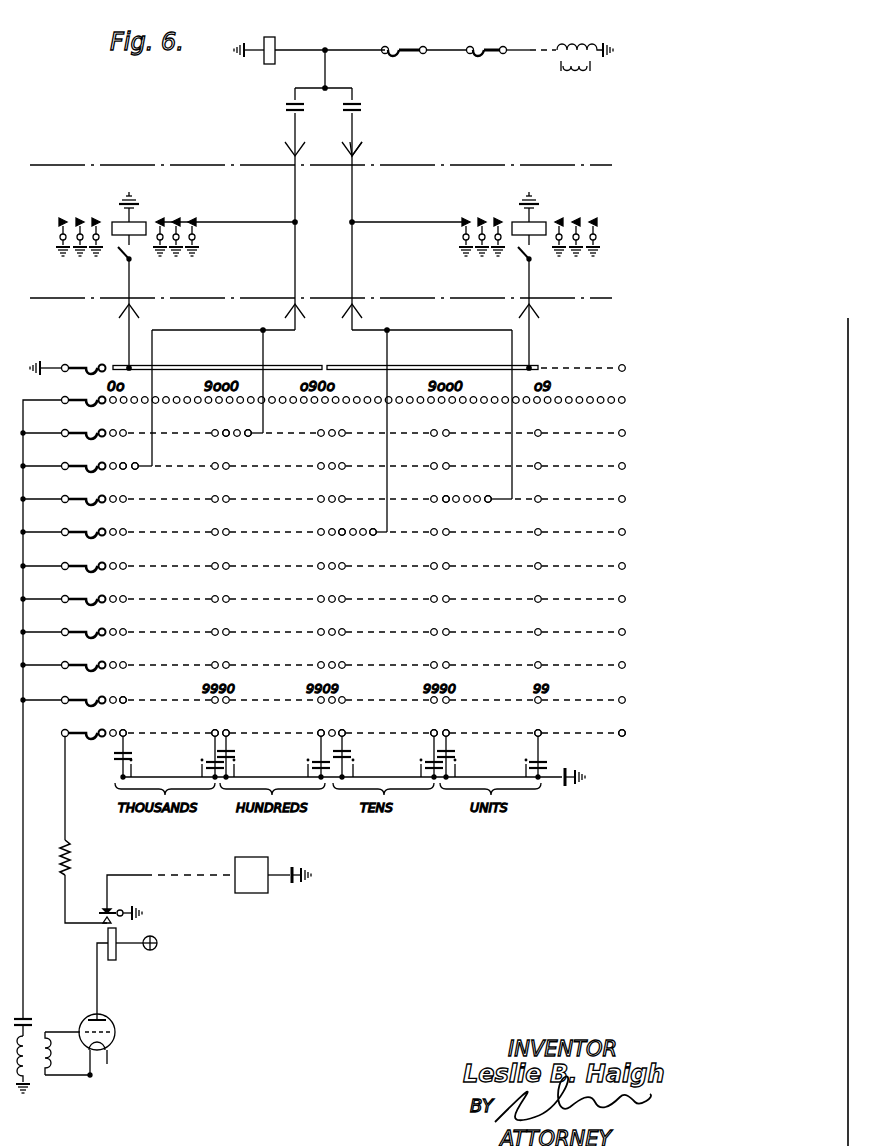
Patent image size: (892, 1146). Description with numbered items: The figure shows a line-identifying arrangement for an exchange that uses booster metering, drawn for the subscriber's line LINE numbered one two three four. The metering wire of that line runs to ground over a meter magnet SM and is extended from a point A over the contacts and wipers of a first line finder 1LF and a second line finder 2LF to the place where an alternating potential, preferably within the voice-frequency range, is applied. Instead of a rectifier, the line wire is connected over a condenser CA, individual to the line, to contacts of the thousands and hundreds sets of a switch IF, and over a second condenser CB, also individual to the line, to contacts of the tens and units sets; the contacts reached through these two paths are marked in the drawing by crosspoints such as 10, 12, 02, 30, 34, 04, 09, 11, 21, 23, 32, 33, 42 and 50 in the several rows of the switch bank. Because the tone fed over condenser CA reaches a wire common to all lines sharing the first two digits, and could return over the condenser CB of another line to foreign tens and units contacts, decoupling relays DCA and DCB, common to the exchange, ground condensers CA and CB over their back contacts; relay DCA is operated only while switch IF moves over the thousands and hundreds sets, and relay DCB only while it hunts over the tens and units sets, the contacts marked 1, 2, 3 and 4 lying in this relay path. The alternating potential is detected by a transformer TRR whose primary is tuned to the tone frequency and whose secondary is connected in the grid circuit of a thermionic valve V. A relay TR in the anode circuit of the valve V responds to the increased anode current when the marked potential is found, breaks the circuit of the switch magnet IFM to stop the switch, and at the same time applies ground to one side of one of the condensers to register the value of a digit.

The meter magnet SM is at (270, 41).
The line point A is at (323, 59).
The first line finder 1LF is at (404, 42).
The second line finder 2LF is at (487, 42).
The condenser CA is at (281, 209).
The second condenser CB is at (366, 209).
The decoupling relay DCA is at (176, 279).
The decoupling relay DCB is at (475, 279).
The contact 1 is at (294, 297).
The contact 2 is at (230, 304).
The contact 3 is at (349, 297).
The contact 4 is at (432, 304).
The switch IF is at (32, 709).
The switch magnet IFM is at (273, 875).
The relay TR is at (127, 974).
The transformer TRR is at (53, 1051).
The thermionic valve V is at (105, 1044).
The crosspoint 10 is at (228, 425).
The crosspoint 12 is at (185, 575).
The crosspoint 02 is at (116, 458).
The crosspoint 30 is at (442, 491).
The crosspoint 34 is at (430, 507).
The crosspoint 04 is at (336, 524).
The crosspoint 09 is at (118, 692).
The crosspoint 11 is at (214, 723).
The crosspoint 21 is at (318, 723).
The crosspoint 23 is at (342, 723).
The crosspoint 32 is at (430, 723).
The crosspoint 33 is at (448, 723).
The crosspoint 42 is at (536, 723).
The crosspoint 50 is at (620, 723).
The line LINE is at (356, 47).